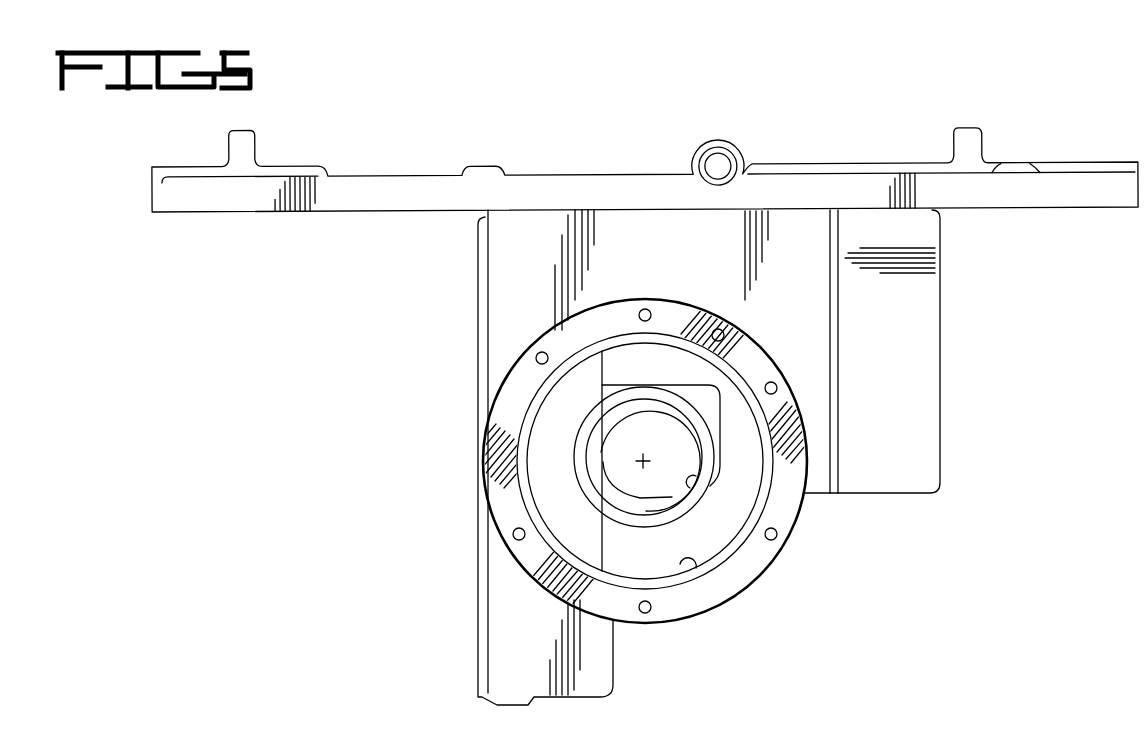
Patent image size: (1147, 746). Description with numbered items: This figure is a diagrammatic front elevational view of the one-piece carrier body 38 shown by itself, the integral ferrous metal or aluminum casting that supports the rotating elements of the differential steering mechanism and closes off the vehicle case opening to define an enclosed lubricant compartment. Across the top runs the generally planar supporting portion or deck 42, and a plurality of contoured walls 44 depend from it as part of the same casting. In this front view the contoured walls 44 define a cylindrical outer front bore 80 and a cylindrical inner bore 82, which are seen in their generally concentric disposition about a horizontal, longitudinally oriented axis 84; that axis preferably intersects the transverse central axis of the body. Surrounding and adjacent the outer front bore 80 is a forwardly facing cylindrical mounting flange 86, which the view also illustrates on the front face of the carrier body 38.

The one-piece carrier body 38 is at (418, 153).
The planar supporting portion or deck 42 is at (1080, 180).
The contoured walls 44 is at (922, 384).
The cylindrical outer front bore 80 is at (695, 575).
The cylindrical inner bore 82 is at (690, 486).
The horizontal, longitudinally oriented axis 84 is at (640, 458).
The forwardly facing cylindrical mounting flange 86 is at (767, 545).